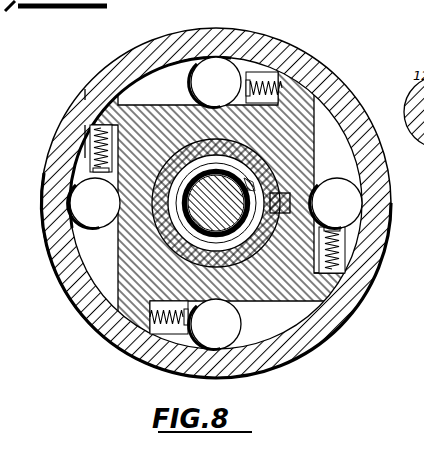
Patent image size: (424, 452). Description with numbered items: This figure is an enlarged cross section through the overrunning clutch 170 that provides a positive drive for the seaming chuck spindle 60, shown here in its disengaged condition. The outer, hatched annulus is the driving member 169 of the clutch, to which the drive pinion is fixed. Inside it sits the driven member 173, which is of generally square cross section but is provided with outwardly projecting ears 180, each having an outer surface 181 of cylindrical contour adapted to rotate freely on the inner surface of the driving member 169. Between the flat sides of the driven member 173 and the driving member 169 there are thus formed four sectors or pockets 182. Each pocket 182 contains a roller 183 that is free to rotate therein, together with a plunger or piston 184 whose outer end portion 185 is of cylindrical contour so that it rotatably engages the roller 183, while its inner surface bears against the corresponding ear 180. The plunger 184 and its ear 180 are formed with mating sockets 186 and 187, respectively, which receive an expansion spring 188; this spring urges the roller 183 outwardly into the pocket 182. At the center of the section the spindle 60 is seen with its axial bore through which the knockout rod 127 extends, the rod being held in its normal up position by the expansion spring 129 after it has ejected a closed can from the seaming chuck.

The overrunning clutch 170 is at (330, 63).
The driving member 169 is at (346, 98).
The outwardly projecting ear 180 is at (110, 104).
The driven member 173 is at (158, 112).
The outer surface 181 is at (342, 291).
The pocket 182 is at (180, 283).
The roller 183 is at (222, 91).
The plunger 184 is at (254, 72).
The outer end portion 185 is at (249, 72).
The socket 186 is at (85, 158).
The socket 187 is at (89, 99).
The expansion spring 188 is at (92, 147).
The expansion spring 129 is at (239, 170).
The spindle 60 is at (276, 181).
The knockout rod 127 is at (195, 212).